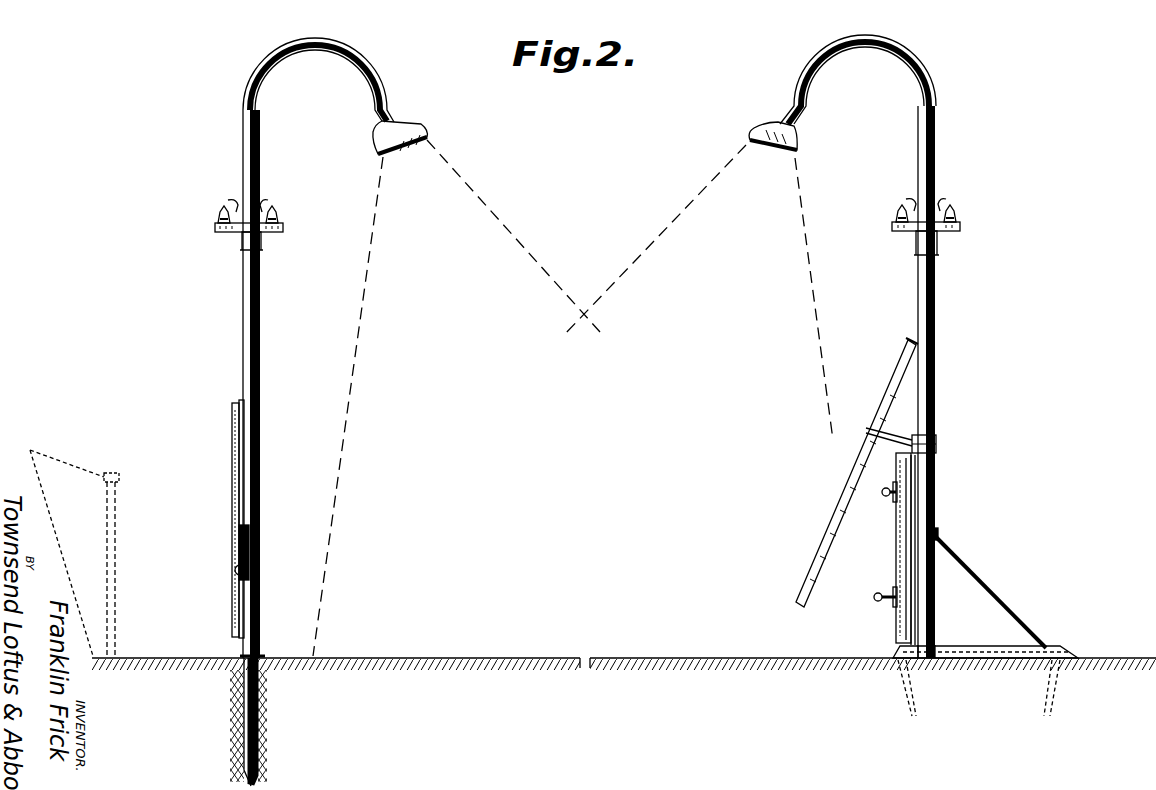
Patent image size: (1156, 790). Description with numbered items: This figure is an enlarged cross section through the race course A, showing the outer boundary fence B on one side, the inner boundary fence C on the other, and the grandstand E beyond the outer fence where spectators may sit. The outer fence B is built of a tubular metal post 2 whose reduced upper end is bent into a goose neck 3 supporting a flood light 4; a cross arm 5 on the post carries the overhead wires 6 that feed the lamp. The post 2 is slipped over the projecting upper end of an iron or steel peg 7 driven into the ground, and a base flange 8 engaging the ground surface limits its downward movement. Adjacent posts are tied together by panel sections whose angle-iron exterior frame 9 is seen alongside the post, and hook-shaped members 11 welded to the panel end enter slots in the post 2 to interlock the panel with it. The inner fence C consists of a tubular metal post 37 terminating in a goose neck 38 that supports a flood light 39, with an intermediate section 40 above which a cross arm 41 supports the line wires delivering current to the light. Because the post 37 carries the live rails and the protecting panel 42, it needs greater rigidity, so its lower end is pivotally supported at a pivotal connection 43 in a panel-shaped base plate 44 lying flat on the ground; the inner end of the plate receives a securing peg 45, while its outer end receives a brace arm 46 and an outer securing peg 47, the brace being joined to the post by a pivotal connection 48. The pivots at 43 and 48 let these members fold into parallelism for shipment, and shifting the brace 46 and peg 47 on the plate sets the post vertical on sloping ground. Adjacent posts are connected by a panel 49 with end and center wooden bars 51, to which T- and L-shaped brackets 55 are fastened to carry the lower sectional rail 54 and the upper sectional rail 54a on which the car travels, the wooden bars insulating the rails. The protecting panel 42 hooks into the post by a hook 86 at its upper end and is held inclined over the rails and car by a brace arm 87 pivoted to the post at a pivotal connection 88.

The tubular metal post 2 is at (260, 367).
The goose neck 3 is at (350, 48).
The flood light 4 is at (418, 132).
The cross arm 5 is at (283, 230).
The overhead wires 6 is at (214, 209).
The peg 7 is at (258, 720).
The base flange 8 is at (268, 658).
The exterior frame 9 is at (232, 492).
The hook-shaped member 11 is at (246, 560).
The tubular metal post 37 is at (936, 500).
The goose neck 38 is at (900, 55).
The flood light 39 is at (800, 143).
The intermediate section 40 is at (935, 306).
The cross arm 41 is at (960, 227).
The protecting panel 42 is at (862, 455).
The pivotal connection 43 is at (940, 647).
The base plate 44 is at (980, 647).
The securing peg 45 is at (906, 694).
The brace arm 46 is at (978, 578).
The outer securing peg 47 is at (1058, 697).
The pivotal connection 48 is at (940, 535).
The panel 49 is at (895, 541).
The wooden bar 51 is at (896, 566).
The lower sectional rail 54 is at (876, 598).
The upper sectional rail 54a is at (878, 493).
The bracket 55 is at (880, 490).
The hook 86 is at (915, 345).
The brace arm 87 is at (880, 432).
The pivotal connection 88 is at (912, 437).
The race course A is at (587, 567).
The outer boundary fence B is at (224, 422).
The inner boundary fence C is at (954, 463).
The grandstand E is at (30, 450).